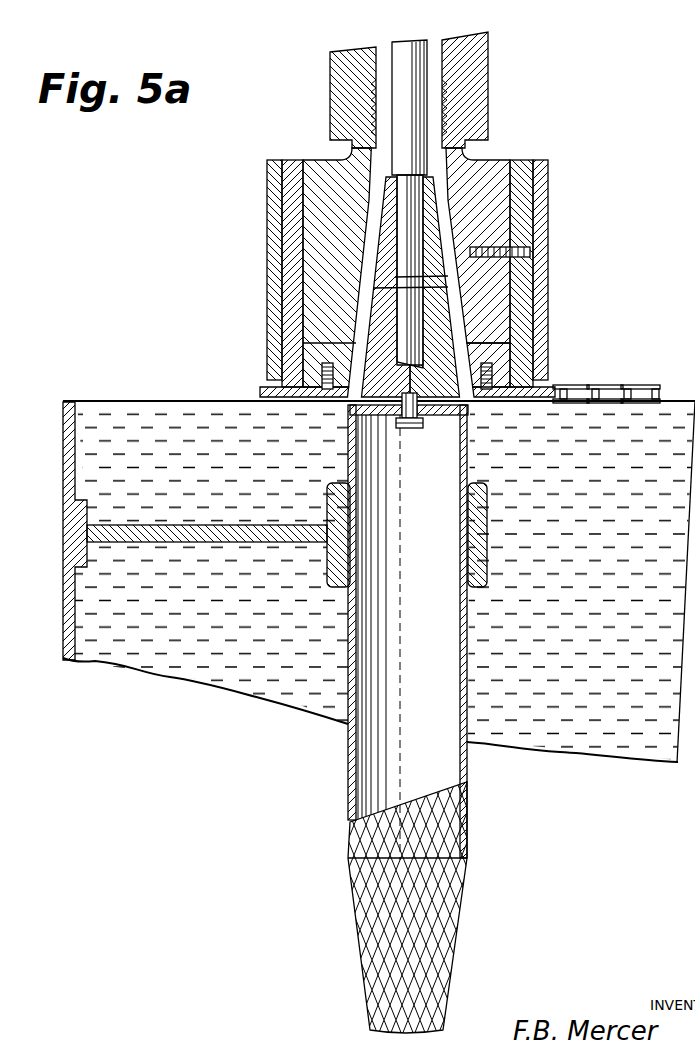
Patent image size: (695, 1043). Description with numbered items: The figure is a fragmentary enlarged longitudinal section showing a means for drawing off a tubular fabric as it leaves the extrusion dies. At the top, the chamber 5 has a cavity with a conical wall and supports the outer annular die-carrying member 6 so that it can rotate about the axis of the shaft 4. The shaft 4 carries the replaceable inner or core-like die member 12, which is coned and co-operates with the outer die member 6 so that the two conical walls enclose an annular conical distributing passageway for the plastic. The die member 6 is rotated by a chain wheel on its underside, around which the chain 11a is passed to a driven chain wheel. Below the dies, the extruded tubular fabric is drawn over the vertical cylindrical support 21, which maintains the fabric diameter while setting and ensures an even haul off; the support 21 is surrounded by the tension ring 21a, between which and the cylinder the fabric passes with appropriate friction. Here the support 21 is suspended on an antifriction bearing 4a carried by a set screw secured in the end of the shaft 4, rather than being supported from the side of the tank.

The shaft 4 is at (412, 221).
The antifriction bearing 4a is at (420, 429).
The chamber 5 is at (500, 283).
The outer annular die-carrying member 6 is at (500, 352).
The chain 11a is at (613, 384).
The inner or core-like die member 12 is at (375, 312).
The vertical cylindrical support 21 is at (388, 584).
The tension ring 21a is at (488, 574).